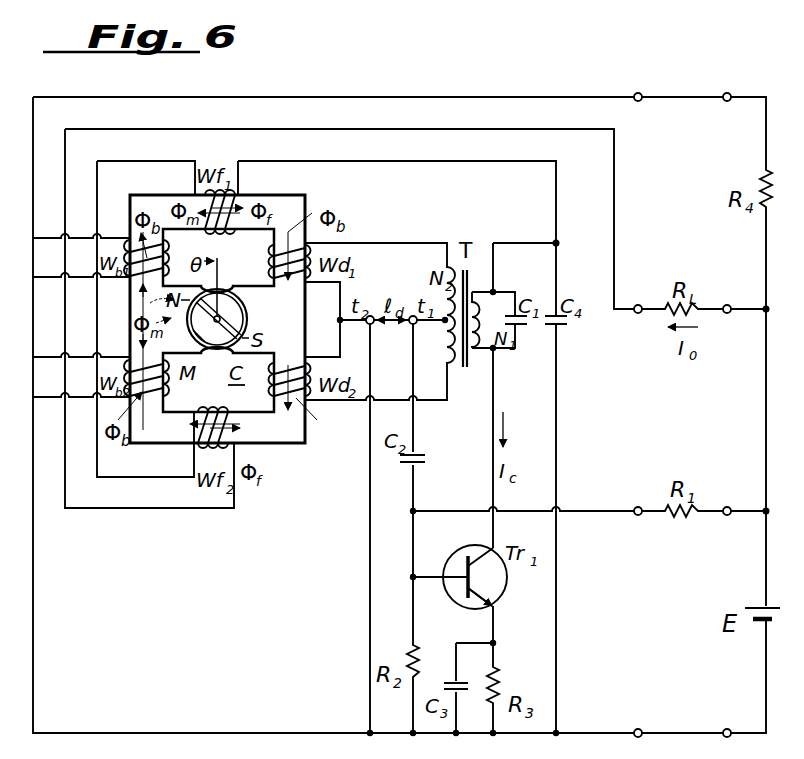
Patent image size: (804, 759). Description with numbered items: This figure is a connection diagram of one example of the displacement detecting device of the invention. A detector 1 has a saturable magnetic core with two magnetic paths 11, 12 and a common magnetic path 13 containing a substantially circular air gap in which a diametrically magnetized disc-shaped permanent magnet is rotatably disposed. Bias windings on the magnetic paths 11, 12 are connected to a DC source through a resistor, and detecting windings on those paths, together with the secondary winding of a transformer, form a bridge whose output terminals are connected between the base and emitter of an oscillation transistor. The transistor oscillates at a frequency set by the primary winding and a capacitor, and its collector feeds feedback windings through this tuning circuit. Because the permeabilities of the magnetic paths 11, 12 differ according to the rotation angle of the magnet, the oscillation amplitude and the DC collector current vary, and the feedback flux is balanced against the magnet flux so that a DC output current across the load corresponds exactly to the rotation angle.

The displacement detecting device 1 is at (217, 340).
The magnetic path 11 is at (168, 194).
The magnetic path 12 is at (163, 446).
The common magnetic path 13 is at (200, 292).